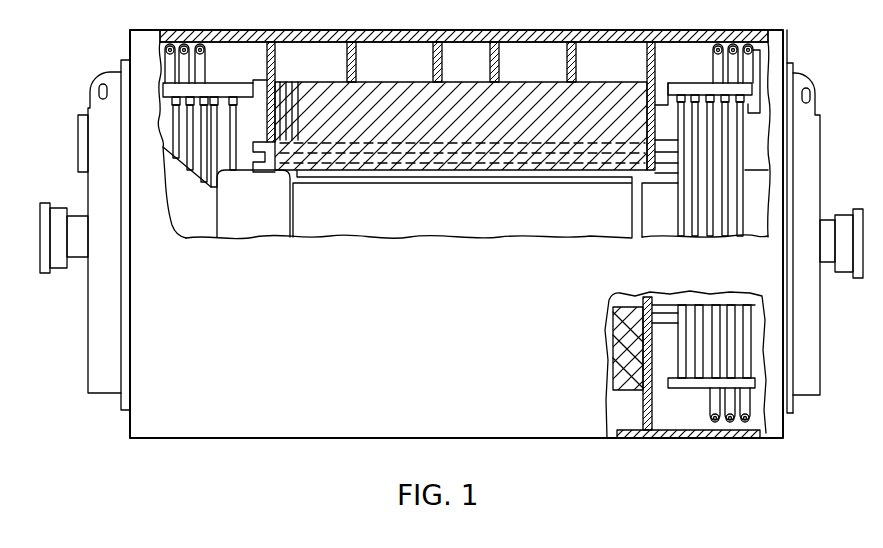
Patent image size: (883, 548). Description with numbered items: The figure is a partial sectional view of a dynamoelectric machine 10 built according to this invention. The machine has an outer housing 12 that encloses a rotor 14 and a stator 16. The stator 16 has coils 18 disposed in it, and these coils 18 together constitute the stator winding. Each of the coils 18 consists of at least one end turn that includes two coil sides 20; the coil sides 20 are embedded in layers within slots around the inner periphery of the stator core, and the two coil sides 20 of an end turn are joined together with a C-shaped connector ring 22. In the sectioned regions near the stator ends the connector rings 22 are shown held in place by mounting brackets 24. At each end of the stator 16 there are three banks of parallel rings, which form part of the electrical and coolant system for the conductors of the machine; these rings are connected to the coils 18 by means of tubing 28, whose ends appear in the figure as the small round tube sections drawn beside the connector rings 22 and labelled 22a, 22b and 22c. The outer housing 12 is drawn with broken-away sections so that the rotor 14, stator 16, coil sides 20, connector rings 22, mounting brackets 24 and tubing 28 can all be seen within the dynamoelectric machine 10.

The dynamoelectric machine 10 is at (323, 478).
The outer housing 12 is at (218, 440).
The rotor 14 is at (507, 228).
The stator 16 is at (520, 91).
The coils 18 is at (408, 180).
The coil sides 20 is at (671, 172).
The C-shaped connector ring 22 is at (232, 97).
The lead wire 22a is at (165, 47).
The lead wire 22b is at (185, 44).
The lead wire 22c is at (201, 44).
The mounting brackets 24 is at (252, 84).
The tubing 28 is at (767, 60).